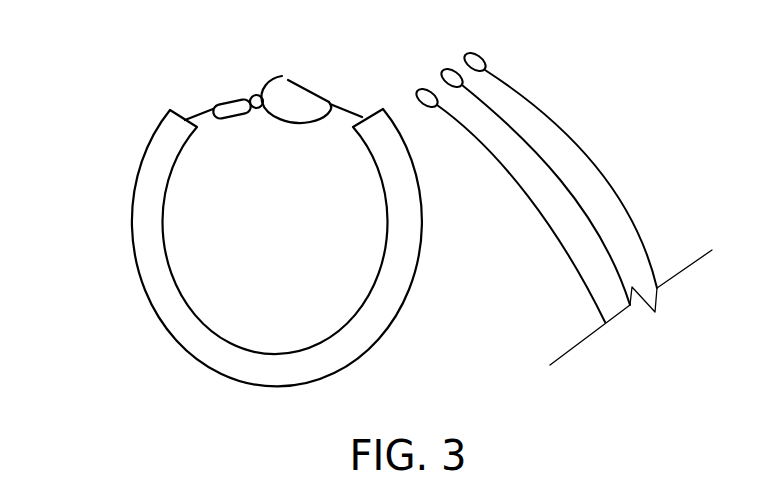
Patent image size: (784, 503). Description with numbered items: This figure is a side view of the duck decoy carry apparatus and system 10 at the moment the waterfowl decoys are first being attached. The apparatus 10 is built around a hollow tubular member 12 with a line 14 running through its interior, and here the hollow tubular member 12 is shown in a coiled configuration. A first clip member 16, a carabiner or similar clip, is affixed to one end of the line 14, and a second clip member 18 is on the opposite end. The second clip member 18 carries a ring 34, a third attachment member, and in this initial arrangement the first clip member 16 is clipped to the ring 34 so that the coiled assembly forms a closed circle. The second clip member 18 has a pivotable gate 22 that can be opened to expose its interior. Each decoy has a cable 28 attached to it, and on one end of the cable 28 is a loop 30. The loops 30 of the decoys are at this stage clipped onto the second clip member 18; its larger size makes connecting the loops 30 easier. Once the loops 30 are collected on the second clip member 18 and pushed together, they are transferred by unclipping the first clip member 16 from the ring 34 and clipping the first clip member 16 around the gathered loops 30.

The duck decoy carry apparatus and system 10 is at (95, 113).
The hollow tubular member 12 is at (192, 360).
The line 14 is at (193, 110).
The first clip member 16 is at (232, 118).
The ring 34 is at (258, 108).
The second clip member 18 is at (308, 124).
The gate 22 is at (300, 80).
The cable 28 is at (597, 167).
The loop 30 is at (472, 53).